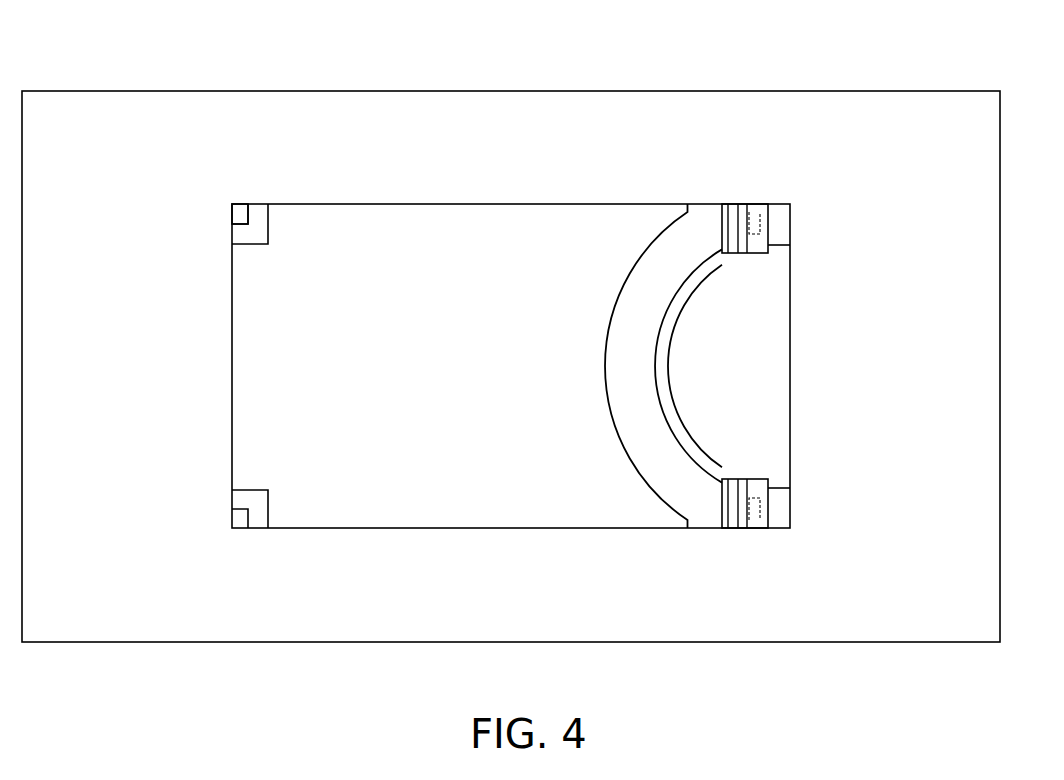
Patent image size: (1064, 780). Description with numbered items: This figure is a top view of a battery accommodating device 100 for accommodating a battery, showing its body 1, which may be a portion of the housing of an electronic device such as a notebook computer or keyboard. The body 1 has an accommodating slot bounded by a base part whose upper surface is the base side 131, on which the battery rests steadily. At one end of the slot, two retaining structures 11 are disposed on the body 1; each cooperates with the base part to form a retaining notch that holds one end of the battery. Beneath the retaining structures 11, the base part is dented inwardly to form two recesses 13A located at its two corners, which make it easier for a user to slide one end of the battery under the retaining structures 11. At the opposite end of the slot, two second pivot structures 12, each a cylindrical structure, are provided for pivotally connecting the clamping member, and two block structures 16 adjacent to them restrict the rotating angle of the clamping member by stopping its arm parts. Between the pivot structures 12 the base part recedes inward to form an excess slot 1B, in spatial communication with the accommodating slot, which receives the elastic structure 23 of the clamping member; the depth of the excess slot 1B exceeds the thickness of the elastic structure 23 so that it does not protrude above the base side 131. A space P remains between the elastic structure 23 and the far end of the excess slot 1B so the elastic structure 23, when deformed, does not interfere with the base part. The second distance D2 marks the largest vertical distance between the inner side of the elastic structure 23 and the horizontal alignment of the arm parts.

The battery accommodating device 100 is at (68, 30).
The body 1 is at (996, 273).
The excess slot 1B is at (745, 361).
The retaining structure 11 is at (238, 212).
The second pivot structure 12 is at (752, 222).
The recess 13A is at (257, 210).
The base side 131 is at (425, 238).
The block structure 16 is at (775, 233).
The elastic structure 23 is at (668, 417).
The space P is at (640, 338).
The second distance D2 is at (666, 345).